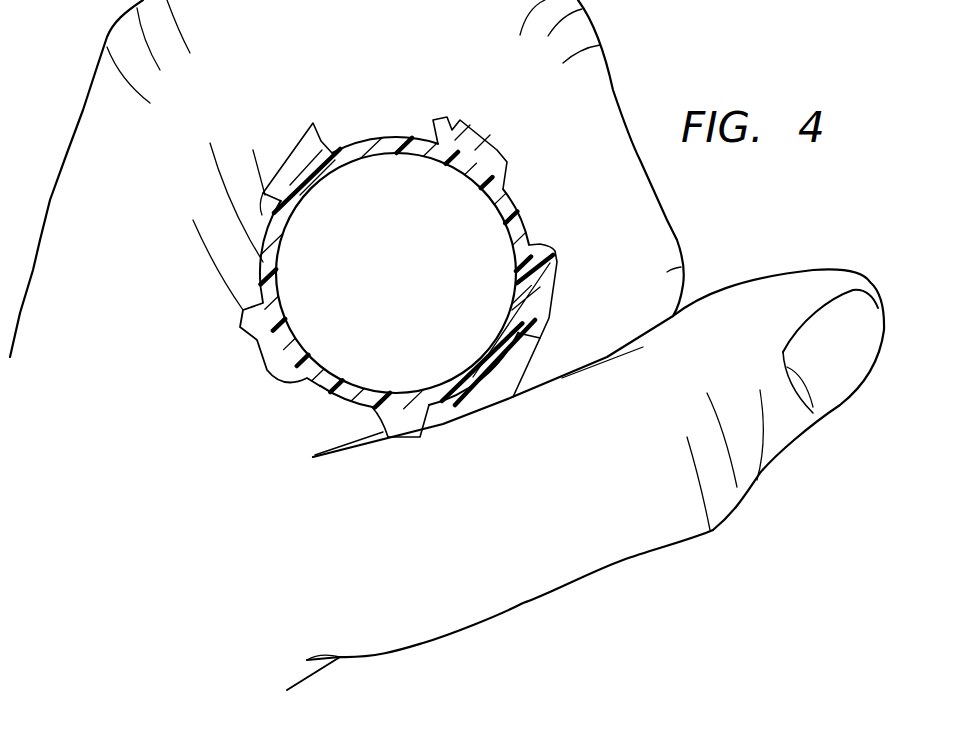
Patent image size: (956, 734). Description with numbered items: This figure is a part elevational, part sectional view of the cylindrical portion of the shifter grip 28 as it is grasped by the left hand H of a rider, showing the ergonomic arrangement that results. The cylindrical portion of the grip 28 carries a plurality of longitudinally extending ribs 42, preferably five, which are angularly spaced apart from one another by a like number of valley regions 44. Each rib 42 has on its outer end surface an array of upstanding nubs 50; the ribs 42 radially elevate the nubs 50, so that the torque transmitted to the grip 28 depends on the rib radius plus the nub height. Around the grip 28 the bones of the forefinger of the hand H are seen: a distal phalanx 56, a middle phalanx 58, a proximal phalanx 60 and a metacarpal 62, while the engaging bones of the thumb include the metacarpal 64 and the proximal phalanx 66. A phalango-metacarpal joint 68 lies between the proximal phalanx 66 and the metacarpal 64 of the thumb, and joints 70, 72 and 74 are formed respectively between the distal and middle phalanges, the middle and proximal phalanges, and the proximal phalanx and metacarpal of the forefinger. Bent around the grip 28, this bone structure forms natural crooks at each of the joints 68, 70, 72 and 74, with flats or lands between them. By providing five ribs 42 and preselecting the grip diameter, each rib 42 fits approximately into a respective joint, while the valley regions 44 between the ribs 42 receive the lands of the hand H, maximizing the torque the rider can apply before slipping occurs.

The grip 28 is at (522, 262).
The ribs 42 is at (312, 183).
The valley regions 44 is at (365, 140).
The nubs 50 is at (445, 120).
The distal phalanx 56 is at (608, 320).
The middle phalanx 58 is at (600, 171).
The proximal phalanx 60 is at (336, 47).
The metacarpal 62 is at (133, 244).
The metacarpal 64 is at (281, 578).
The proximal phalanx 66 is at (609, 504).
The phalango-metacarpal joint 68 is at (421, 562).
The joint 70 is at (647, 257).
The joint 72 is at (551, 79).
The joint 74 is at (206, 114).
The hand H is at (147, 461).